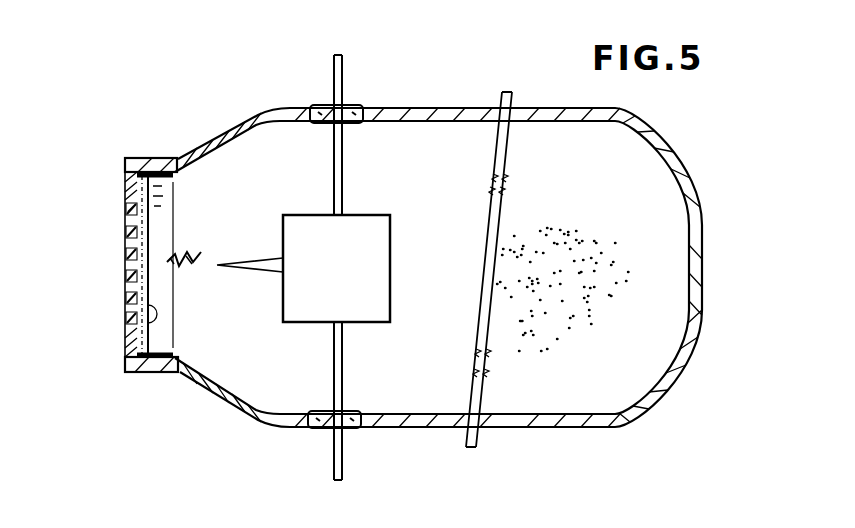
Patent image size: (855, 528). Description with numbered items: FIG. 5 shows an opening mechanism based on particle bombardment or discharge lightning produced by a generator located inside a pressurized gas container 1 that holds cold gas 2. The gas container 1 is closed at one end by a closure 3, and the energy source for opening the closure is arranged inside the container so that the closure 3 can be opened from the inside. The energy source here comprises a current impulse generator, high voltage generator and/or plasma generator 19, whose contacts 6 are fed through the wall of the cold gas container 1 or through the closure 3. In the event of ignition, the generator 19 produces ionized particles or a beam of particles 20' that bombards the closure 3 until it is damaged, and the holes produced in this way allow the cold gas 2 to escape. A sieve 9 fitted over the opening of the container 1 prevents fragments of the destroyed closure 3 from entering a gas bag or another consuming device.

The gas container 1 is at (483, 108).
The cold gas 2 is at (472, 234).
The closure 3 is at (130, 327).
The contacts 6 is at (343, 68).
The sieve 9 is at (118, 311).
The current impulse generator, high voltage generator, and/or plasma generator 19 is at (306, 275).
The beam of particles 20' is at (201, 295).